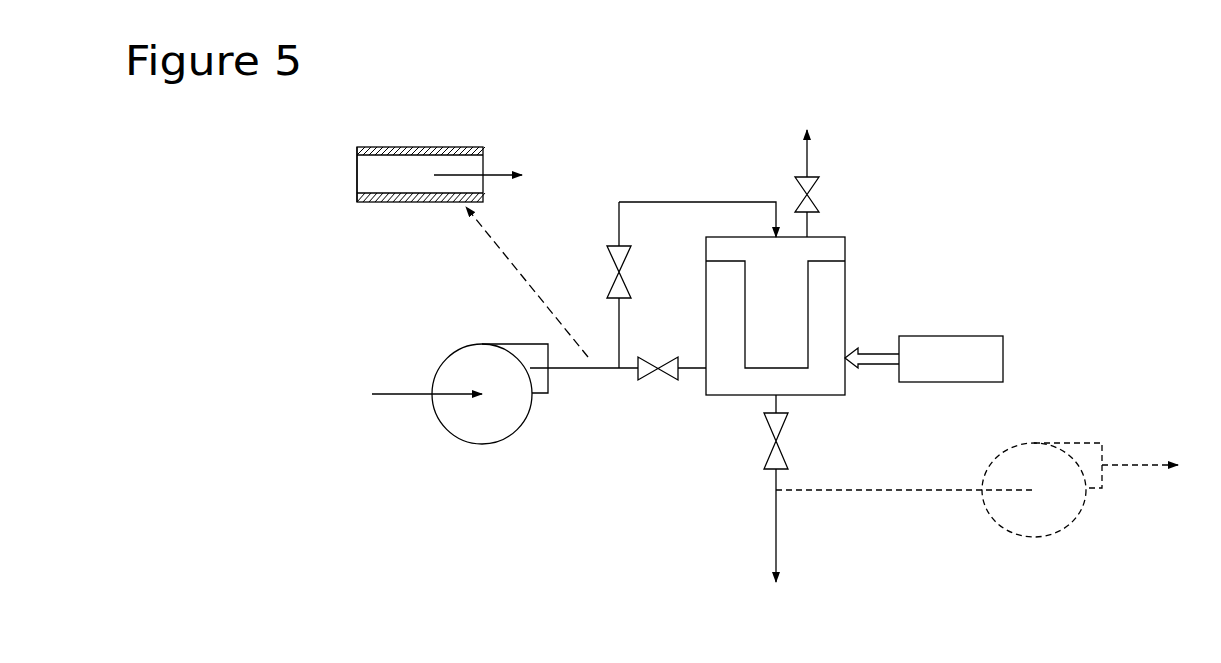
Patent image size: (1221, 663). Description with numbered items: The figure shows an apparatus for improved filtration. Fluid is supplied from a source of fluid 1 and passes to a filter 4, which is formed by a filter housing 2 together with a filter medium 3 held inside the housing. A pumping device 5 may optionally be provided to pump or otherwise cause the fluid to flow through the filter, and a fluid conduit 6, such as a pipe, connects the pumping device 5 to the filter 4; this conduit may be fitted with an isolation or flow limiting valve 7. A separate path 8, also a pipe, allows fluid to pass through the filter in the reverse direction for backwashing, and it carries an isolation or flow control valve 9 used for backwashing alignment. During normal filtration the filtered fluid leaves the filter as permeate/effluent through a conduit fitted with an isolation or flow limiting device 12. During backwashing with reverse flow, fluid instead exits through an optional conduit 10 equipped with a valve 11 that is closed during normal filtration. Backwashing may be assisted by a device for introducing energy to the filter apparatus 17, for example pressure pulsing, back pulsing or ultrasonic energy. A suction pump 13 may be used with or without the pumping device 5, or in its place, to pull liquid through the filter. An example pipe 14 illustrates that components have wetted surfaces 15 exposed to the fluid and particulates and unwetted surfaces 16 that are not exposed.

The source of fluid 1 is at (290, 368).
The filter housing 2 is at (843, 230).
The filter medium 3 is at (808, 305).
The filter 4 is at (848, 402).
The pumping device 5 is at (432, 438).
The fluid conduit 6 is at (697, 195).
The valve 7 is at (603, 258).
The path 8 is at (628, 378).
The valve 9 is at (662, 385).
The conduit 10 is at (807, 104).
The valve 11 is at (833, 187).
The isolation or flow limiting device 12 is at (757, 445).
The suction pump 13 is at (977, 506).
The pipe 14 is at (487, 147).
The wetted surfaces 15 is at (387, 153).
The unwetted surfaces 16 is at (408, 145).
The device for introducing energy to the filter apparatus 17 is at (983, 336).